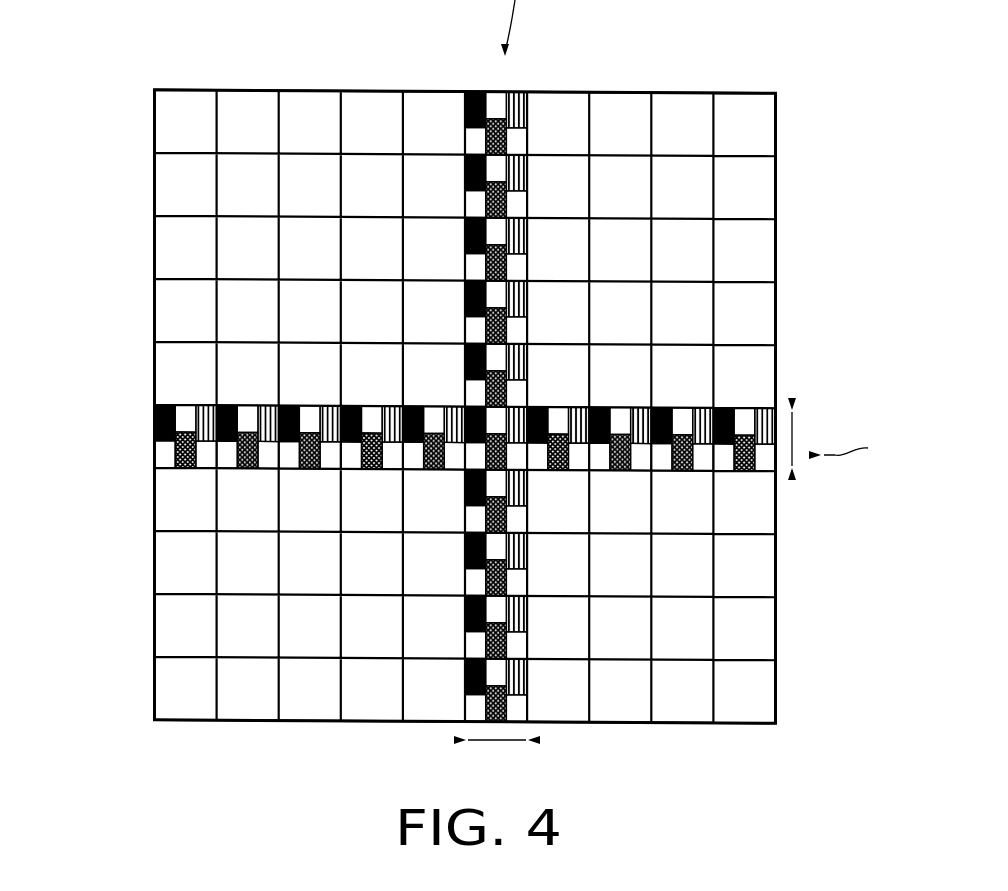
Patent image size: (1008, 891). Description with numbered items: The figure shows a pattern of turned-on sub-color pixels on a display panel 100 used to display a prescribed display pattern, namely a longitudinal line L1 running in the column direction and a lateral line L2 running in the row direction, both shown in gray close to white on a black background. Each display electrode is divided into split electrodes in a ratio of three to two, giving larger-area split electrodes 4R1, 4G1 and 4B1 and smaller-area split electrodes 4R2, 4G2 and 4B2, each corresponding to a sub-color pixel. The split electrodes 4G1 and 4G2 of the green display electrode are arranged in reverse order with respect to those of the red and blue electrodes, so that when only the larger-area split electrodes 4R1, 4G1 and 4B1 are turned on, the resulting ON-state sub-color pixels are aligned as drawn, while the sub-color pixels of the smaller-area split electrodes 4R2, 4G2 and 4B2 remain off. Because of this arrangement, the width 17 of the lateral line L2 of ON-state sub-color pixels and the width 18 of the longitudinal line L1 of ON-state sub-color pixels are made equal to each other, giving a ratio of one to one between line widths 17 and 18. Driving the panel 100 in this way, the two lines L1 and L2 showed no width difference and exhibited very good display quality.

The pixel panel / display substrate 100 is at (684, 92).
The larger-area split electrode 4R1 is at (468, 95).
The smaller-area split electrode 4R2 is at (466, 133).
The larger-area split electrode 4G1 is at (503, 92).
The smaller-area split electrode 4G2 is at (496, 92).
The larger-area split electrode 4B1 is at (523, 92).
The smaller-area split electrode 4B2 is at (538, 142).
The width of lateral line 17 is at (810, 439).
The width of longitudinal line 18 is at (497, 757).
The longitudinal line L1 is at (519, 878).
The lateral line L2 is at (856, 455).